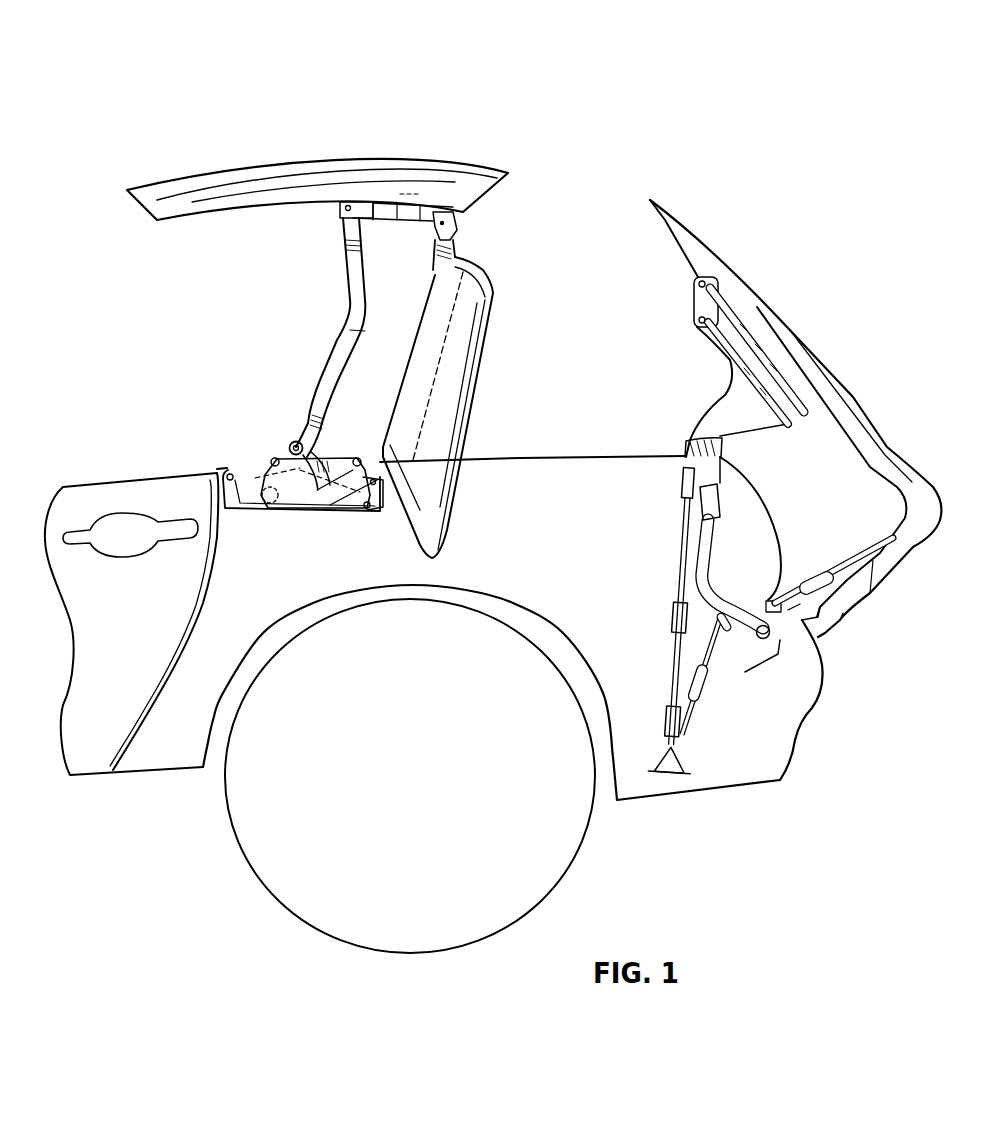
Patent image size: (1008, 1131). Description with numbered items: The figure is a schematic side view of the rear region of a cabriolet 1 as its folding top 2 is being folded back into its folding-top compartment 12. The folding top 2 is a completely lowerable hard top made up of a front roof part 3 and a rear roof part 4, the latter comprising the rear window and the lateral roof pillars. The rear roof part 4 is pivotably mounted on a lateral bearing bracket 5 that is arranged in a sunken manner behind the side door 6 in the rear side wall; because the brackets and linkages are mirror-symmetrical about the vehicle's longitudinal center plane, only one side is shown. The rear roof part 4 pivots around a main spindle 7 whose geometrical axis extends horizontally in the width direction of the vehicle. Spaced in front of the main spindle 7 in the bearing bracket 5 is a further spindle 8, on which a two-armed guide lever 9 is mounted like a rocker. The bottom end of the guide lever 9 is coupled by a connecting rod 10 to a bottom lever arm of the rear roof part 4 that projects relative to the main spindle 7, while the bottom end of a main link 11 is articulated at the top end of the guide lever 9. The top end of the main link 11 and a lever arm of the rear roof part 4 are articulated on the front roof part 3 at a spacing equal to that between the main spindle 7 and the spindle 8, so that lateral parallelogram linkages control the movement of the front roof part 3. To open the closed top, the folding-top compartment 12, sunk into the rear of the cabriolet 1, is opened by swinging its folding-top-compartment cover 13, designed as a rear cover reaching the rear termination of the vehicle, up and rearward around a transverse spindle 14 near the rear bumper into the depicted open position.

The cabriolet 1 is at (572, 92).
The folding top 2 is at (503, 205).
The front roof part 3 is at (397, 163).
The rear roof part 4 is at (462, 493).
The bearing bracket 5 is at (273, 527).
The side door 6 is at (132, 643).
The main spindle 7 is at (405, 498).
The spindle 8 is at (265, 440).
The guide lever 9 is at (304, 458).
The connecting rod 10 is at (303, 458).
The main link 11 is at (350, 283).
The folding-top compartment 12 is at (558, 548).
The folding-top-compartment cover 13 is at (800, 313).
The transverse spindle 14 is at (822, 668).